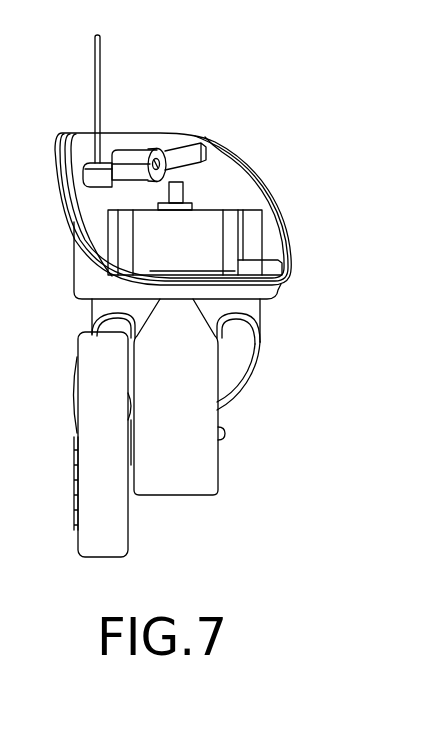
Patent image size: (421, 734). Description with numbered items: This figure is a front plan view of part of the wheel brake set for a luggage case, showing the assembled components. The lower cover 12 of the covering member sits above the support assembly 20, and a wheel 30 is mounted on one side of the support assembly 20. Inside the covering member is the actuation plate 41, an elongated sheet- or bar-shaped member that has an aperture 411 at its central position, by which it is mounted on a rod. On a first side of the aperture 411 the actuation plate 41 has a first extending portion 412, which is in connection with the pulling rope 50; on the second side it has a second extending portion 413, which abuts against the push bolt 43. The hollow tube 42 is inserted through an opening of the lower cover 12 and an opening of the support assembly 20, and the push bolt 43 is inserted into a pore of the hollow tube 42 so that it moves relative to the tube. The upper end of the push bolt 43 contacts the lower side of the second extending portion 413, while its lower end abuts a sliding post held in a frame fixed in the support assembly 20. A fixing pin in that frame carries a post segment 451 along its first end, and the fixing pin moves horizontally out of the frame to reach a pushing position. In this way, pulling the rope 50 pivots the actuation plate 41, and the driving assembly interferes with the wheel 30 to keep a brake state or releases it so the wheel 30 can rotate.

The lower cover 12 is at (82, 277).
The support assembly 20 is at (175, 482).
The wheel 30 is at (86, 544).
The actuation plate 41 is at (125, 150).
The hollow tube 42 is at (193, 207).
The push bolt 43 is at (186, 178).
The pulling rope 50 is at (98, 60).
The aperture 411 is at (160, 150).
The first extending portion 412 is at (84, 163).
The second extending portion 413 is at (190, 143).
The post segment 451 is at (225, 433).